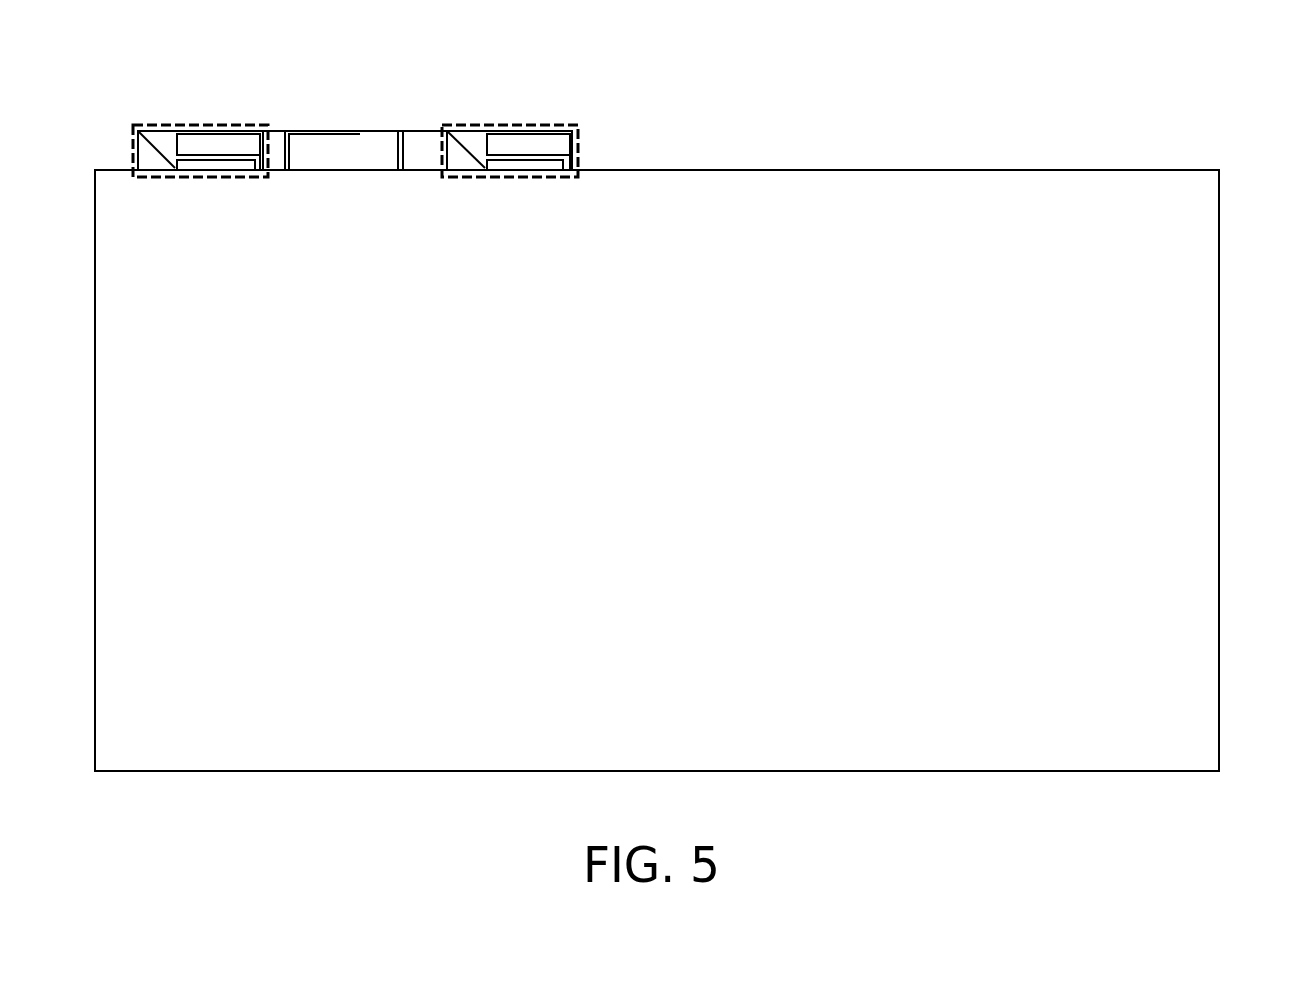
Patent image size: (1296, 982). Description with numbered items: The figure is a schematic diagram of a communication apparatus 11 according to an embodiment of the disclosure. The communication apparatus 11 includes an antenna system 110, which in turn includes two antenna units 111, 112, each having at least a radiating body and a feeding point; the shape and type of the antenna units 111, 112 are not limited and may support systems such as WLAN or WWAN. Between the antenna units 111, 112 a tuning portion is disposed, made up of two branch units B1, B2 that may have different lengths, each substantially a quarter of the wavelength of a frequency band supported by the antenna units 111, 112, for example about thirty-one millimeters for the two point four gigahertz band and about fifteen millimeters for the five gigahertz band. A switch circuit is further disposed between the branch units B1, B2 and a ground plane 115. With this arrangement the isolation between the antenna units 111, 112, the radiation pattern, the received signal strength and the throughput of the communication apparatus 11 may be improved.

The communication apparatus 11 is at (1278, 822).
The antenna system 110 is at (1197, 42).
The antenna unit 111 is at (180, 122).
The antenna unit 112 is at (487, 122).
The ground plane 115 is at (187, 772).
The branch unit B1 is at (307, 130).
The branch unit B2 is at (399, 143).